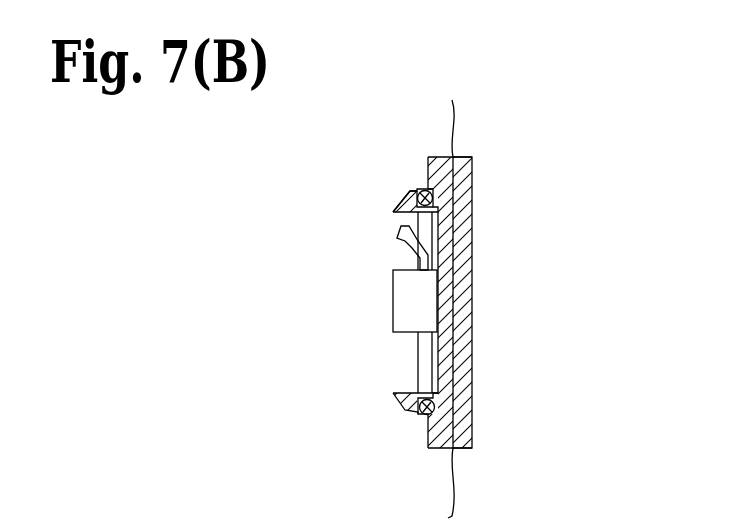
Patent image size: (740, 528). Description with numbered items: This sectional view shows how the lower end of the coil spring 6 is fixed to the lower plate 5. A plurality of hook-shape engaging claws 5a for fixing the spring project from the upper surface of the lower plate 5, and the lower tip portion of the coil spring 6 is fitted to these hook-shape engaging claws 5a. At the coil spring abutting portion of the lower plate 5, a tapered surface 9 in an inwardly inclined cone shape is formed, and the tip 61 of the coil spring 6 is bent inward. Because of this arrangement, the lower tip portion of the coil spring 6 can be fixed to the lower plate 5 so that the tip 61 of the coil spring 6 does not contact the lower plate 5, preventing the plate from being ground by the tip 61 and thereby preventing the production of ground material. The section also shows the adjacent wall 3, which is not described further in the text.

The housing wall 3 is at (457, 125).
The lower plate 5 is at (473, 218).
The hook-shape engaging claws 5a is at (405, 196).
The coil spring 6 is at (425, 372).
The tip 61 is at (410, 247).
The tapered surface 9 is at (436, 414).